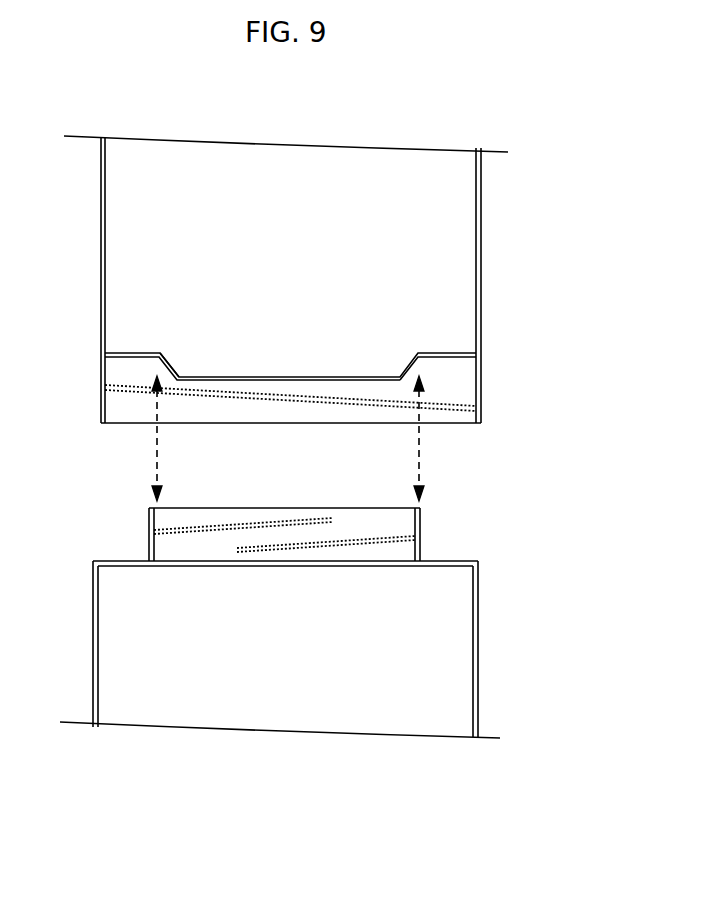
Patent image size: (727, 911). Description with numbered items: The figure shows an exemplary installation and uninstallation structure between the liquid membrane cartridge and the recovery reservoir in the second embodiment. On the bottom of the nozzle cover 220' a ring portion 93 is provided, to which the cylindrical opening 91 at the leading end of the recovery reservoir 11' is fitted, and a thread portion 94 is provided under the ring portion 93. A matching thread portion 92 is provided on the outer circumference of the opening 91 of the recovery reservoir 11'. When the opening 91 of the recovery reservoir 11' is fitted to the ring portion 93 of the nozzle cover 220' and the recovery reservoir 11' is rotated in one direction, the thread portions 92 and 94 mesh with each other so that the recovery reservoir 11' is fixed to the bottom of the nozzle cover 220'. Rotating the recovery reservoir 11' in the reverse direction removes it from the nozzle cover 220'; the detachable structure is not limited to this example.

The nozzle cover 220' is at (318, 279).
The ring portion 93 is at (172, 362).
The thread portion 94 is at (295, 398).
The cylindrical opening 91 is at (368, 506).
The thread portion 92 is at (340, 542).
The recovery reservoir 11' is at (301, 649).